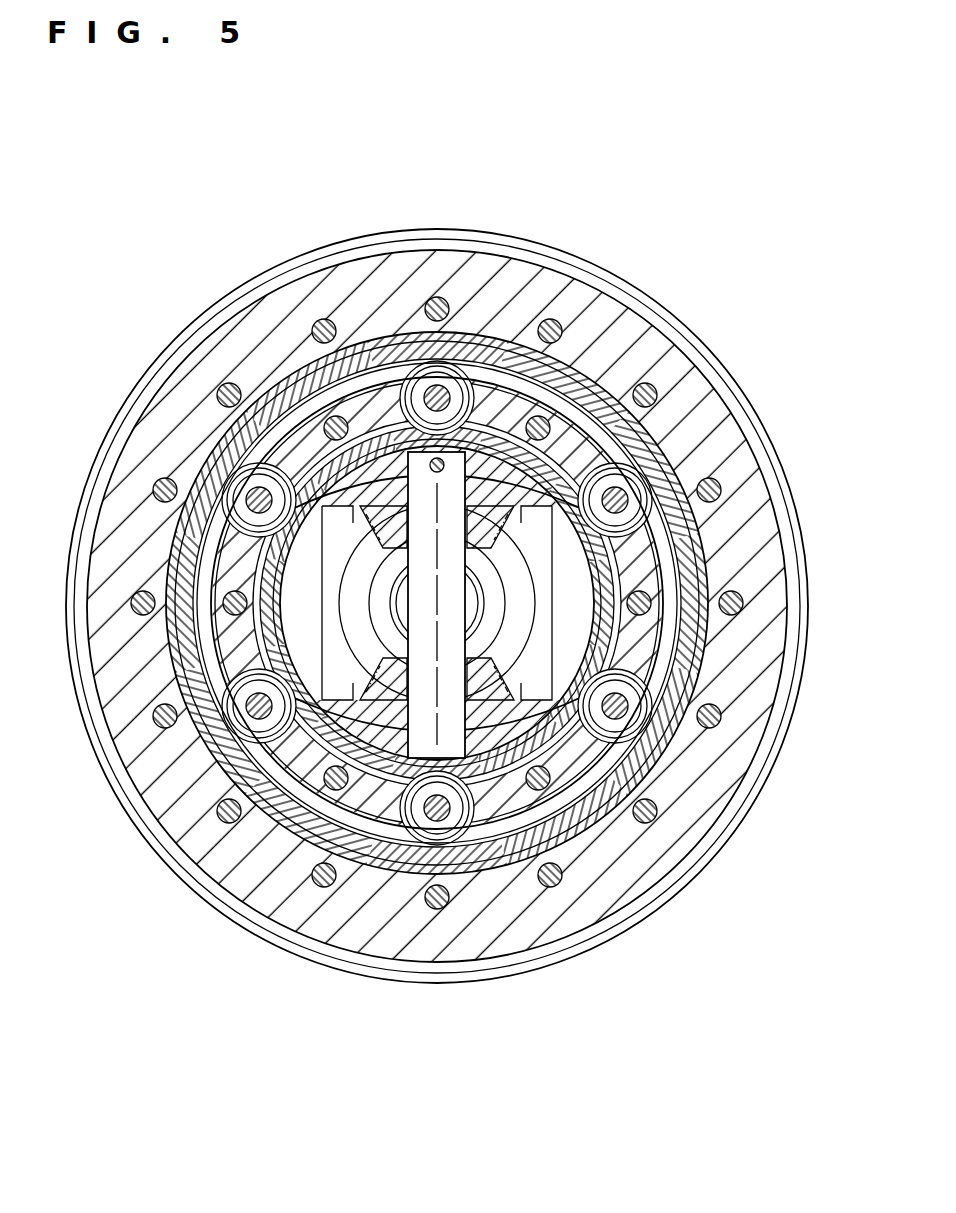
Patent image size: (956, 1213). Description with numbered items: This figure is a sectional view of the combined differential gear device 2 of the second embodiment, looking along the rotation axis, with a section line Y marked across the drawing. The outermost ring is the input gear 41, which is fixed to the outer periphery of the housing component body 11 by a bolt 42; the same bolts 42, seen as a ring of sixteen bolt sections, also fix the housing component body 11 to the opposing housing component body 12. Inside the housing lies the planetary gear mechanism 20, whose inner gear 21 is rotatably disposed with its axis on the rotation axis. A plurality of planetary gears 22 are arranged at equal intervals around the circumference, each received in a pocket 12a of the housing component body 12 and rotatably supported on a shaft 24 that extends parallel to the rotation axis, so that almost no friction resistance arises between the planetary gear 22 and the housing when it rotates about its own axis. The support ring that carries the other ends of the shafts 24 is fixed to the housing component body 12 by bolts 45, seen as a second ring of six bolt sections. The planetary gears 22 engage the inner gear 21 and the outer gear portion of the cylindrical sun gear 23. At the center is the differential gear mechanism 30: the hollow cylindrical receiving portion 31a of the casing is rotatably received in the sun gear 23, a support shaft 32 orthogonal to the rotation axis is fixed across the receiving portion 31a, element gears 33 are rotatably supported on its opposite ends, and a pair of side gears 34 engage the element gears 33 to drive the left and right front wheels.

The combined differential gear device 2 is at (543, 150).
The housing component body 11 is at (303, 370).
The housing component body 12 is at (668, 310).
The pocket 12a is at (505, 365).
The planetary gear mechanism 20 is at (357, 343).
The inner gear 21 is at (243, 447).
The planetary gear 22 is at (458, 372).
The sun gear 23 is at (282, 563).
The shaft 24 is at (420, 390).
The differential gear mechanism 30 is at (622, 835).
The receiving portion 31a is at (487, 737).
The support shaft 32 is at (415, 735).
The element gear 33 is at (608, 460).
The side gear 34 is at (523, 618).
The input gear 41 is at (243, 282).
The bolt 42 is at (563, 367).
The bolt 45 is at (586, 394).
The section line Y is at (437, 210).